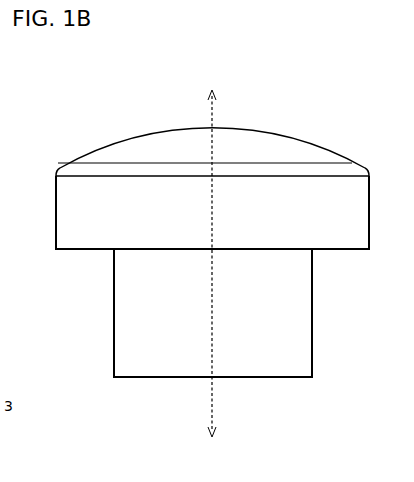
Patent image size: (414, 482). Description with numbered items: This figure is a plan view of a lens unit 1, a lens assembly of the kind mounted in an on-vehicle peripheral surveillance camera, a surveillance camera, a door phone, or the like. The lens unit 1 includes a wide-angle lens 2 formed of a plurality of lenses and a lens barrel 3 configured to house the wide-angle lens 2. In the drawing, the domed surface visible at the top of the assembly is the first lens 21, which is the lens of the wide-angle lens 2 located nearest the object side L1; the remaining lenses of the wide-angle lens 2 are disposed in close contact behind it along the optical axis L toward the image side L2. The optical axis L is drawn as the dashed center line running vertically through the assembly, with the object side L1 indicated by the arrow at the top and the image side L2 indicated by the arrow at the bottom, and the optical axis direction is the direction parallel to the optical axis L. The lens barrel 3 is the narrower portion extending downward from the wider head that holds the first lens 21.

The lens unit 1 is at (63, 91).
The wide-angle lens 2 is at (212, 162).
The first lens 21 is at (260, 138).
The lens barrel 3 is at (111, 312).
The optical axis L is at (212, 410).
The object side L1 is at (211, 77).
The image side L2 is at (215, 456).